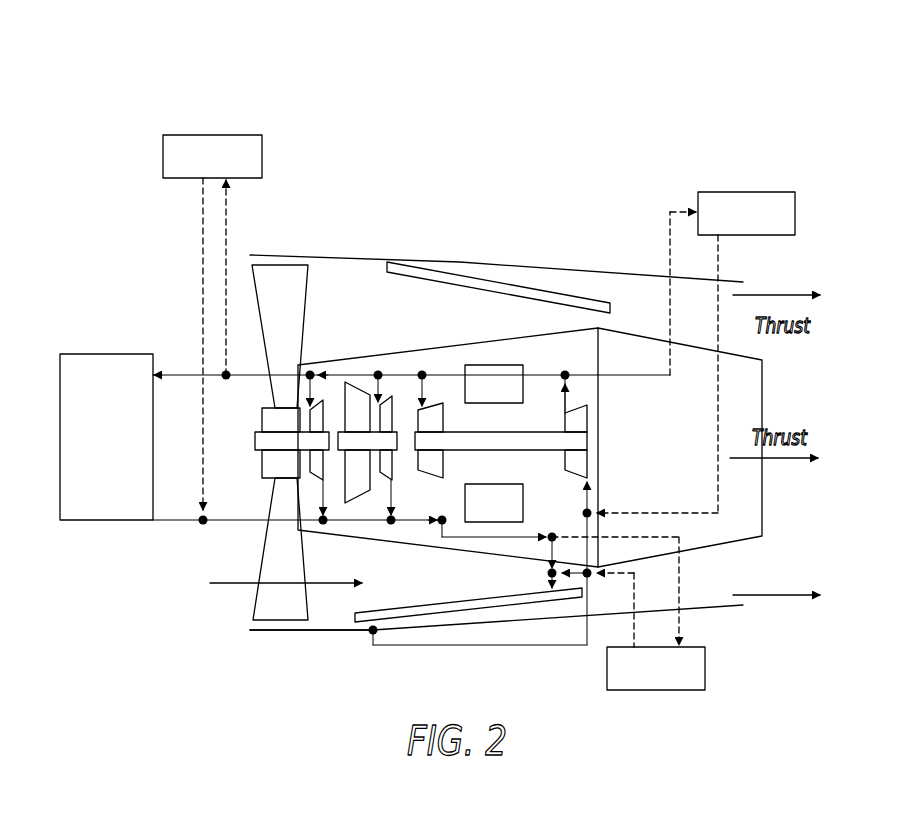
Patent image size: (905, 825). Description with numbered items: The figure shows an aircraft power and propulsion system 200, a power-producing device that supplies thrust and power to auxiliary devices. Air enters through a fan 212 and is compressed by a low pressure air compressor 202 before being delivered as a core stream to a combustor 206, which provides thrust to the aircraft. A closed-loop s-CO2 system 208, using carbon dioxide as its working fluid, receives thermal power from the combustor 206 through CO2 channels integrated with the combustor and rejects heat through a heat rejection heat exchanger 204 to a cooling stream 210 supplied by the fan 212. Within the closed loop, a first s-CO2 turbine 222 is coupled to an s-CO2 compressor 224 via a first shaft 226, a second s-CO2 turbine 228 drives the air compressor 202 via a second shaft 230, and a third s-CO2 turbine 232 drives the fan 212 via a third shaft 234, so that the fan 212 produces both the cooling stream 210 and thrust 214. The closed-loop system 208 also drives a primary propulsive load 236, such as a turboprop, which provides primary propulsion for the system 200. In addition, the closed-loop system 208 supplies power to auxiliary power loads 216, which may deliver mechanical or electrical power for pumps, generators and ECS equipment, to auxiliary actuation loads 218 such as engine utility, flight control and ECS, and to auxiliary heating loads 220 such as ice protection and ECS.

The aircraft power and propulsion system 200 is at (658, 66).
The air compressor 202 is at (360, 390).
The heat rejection heat exchanger 204 is at (487, 612).
The combustor 206 is at (503, 365).
The closed-loop s-CO2 system 208 is at (196, 562).
The cooling stream 210 is at (225, 585).
The fan 212 is at (296, 260).
The thrust 214 is at (817, 640).
The auxiliary power loads 216 is at (240, 135).
The auxiliary actuation loads 218 is at (782, 192).
The auxiliary heating loads 220 is at (645, 690).
The first s-CO2 turbine 222 is at (432, 408).
The s-CO2 compressor 224 is at (578, 405).
The first shaft 226 is at (548, 452).
The second s-CO2 turbine 228 is at (386, 482).
The second shaft 230 is at (400, 440).
The third s-CO2 turbine 232 is at (313, 482).
The third shaft 234 is at (255, 440).
The primary propulsive load 236 is at (80, 354).